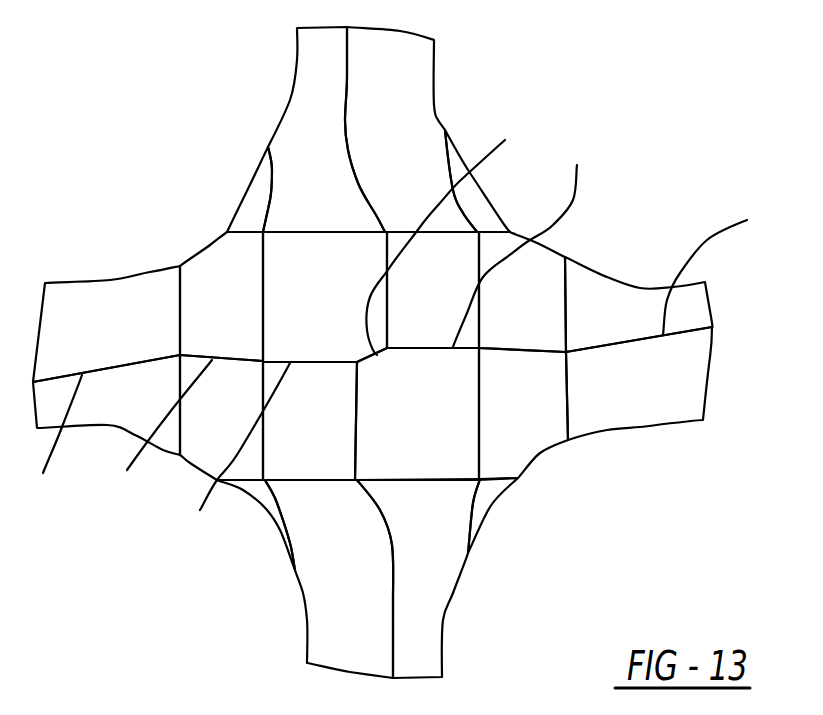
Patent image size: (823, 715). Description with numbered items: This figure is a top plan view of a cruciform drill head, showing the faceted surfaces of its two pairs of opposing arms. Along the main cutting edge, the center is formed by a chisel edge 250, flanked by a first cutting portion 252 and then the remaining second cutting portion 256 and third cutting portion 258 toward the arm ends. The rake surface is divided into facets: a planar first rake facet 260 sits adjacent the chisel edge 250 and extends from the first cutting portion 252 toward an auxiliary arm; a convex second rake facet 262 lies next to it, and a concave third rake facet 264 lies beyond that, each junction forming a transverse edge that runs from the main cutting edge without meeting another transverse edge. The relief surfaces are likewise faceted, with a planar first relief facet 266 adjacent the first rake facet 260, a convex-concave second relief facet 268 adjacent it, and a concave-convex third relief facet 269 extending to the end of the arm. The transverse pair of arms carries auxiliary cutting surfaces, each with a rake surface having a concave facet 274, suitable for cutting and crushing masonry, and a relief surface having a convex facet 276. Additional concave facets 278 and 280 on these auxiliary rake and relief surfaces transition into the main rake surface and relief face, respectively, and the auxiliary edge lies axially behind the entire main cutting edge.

The chisel edge 250 is at (445, 225).
The first cutting portion 252 is at (235, 457).
The second cutting portion 256 is at (352, 322).
The third cutting portion 258 is at (406, 355).
The first rake facet 260 is at (291, 430).
The second rake facet 262 is at (202, 433).
The third rake facet 264 is at (107, 410).
The first relief facet 266 is at (306, 315).
The second relief facet 268 is at (202, 327).
The third relief facet 269 is at (96, 340).
The concave facet 274 is at (294, 197).
The convex facet 276 is at (321, 588).
The concave facet 278 is at (274, 497).
The concave facet 280 is at (256, 187).